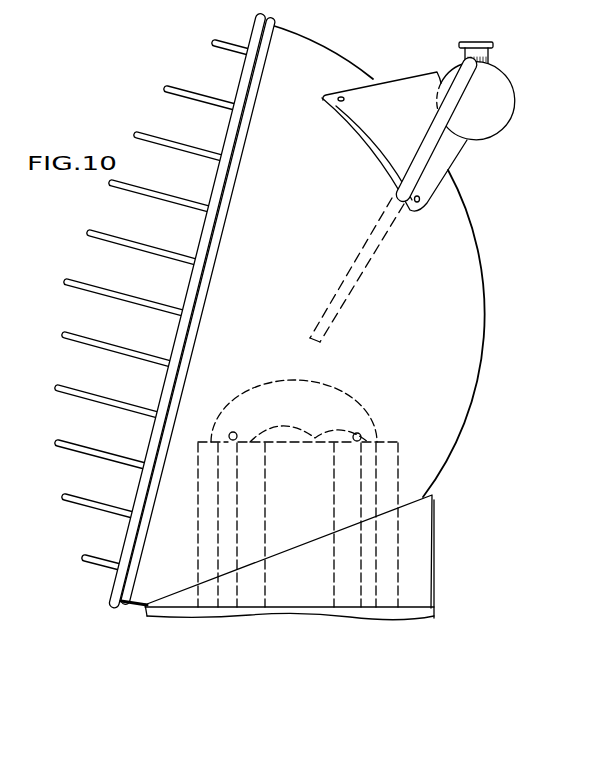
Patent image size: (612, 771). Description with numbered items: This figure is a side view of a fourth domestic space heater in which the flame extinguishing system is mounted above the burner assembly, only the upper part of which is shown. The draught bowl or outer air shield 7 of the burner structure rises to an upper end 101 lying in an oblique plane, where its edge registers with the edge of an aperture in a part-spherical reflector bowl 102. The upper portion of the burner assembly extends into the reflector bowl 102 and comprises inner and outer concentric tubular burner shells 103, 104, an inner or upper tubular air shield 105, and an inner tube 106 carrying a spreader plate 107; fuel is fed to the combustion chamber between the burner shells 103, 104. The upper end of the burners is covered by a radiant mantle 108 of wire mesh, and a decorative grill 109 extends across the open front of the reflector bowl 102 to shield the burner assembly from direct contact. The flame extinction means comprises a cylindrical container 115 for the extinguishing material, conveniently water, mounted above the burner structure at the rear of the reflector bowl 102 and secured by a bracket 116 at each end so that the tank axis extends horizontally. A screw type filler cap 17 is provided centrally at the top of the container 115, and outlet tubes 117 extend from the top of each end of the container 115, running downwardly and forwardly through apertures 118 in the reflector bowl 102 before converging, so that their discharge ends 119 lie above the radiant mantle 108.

The draught bowl or outer air shield 7 is at (434, 588).
The screw type filler cap 17 is at (473, 42).
The upper end 101 is at (420, 503).
The part-spherical reflector bowl 102 is at (454, 425).
The inner tubular burner shell 103 is at (238, 478).
The outer tubular burner shell 104 is at (222, 506).
The inner or upper tubular air shield 105 is at (398, 556).
The inner tube 106 is at (264, 534).
The spreader plate 107 is at (297, 431).
The radiant mantle 108 is at (366, 408).
The decorative grill 109 is at (168, 90).
The container 115 is at (487, 128).
The bracket 116 is at (404, 90).
The outlet tubes 117 is at (358, 253).
The apertures 118 is at (396, 188).
The discharge ends 119 is at (306, 343).